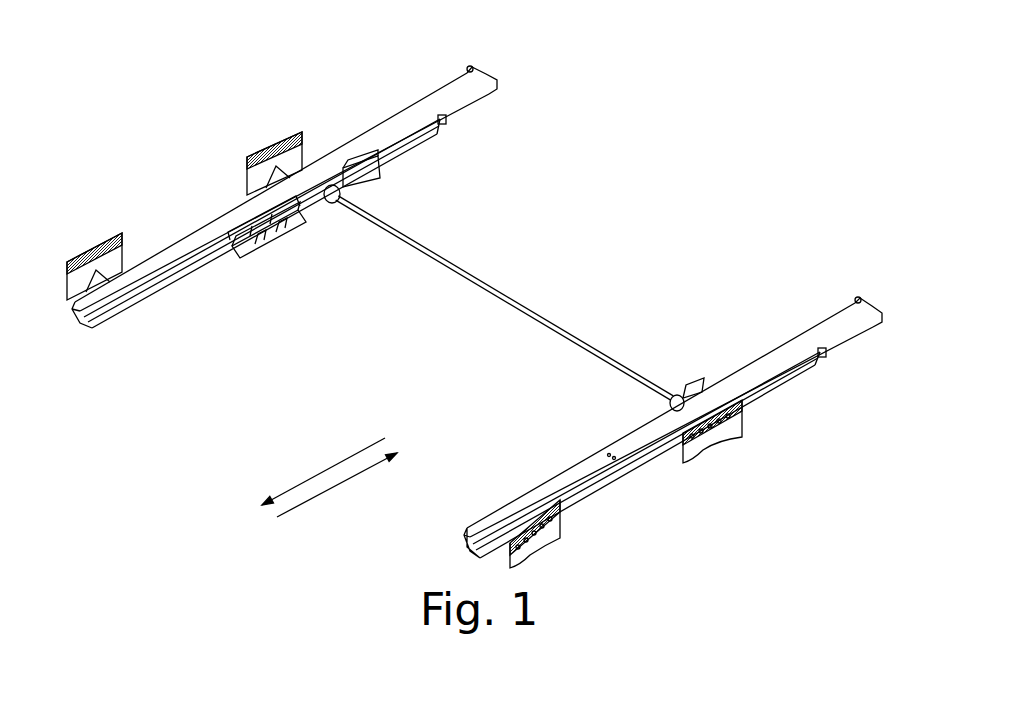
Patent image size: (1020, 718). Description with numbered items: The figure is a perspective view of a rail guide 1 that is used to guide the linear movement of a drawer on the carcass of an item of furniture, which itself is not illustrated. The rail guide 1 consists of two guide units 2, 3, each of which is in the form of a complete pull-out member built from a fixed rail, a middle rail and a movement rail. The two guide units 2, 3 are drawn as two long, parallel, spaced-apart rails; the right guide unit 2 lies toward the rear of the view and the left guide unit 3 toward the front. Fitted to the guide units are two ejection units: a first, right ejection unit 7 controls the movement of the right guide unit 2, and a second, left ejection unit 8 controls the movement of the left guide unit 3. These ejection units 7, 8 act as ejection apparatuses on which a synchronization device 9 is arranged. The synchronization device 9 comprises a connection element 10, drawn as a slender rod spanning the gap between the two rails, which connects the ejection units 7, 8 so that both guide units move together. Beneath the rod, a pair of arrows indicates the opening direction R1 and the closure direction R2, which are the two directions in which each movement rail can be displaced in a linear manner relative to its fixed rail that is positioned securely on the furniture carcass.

The rail guide 1 is at (529, 190).
The guide unit 2 is at (440, 75).
The guide unit 3 is at (815, 389).
The ejection unit 7 is at (287, 250).
The ejection unit 8 is at (693, 383).
The synchronization device 9 is at (447, 232).
The connection element 10 is at (517, 307).
The opening direction R1 is at (317, 478).
The closure direction R2 is at (331, 488).